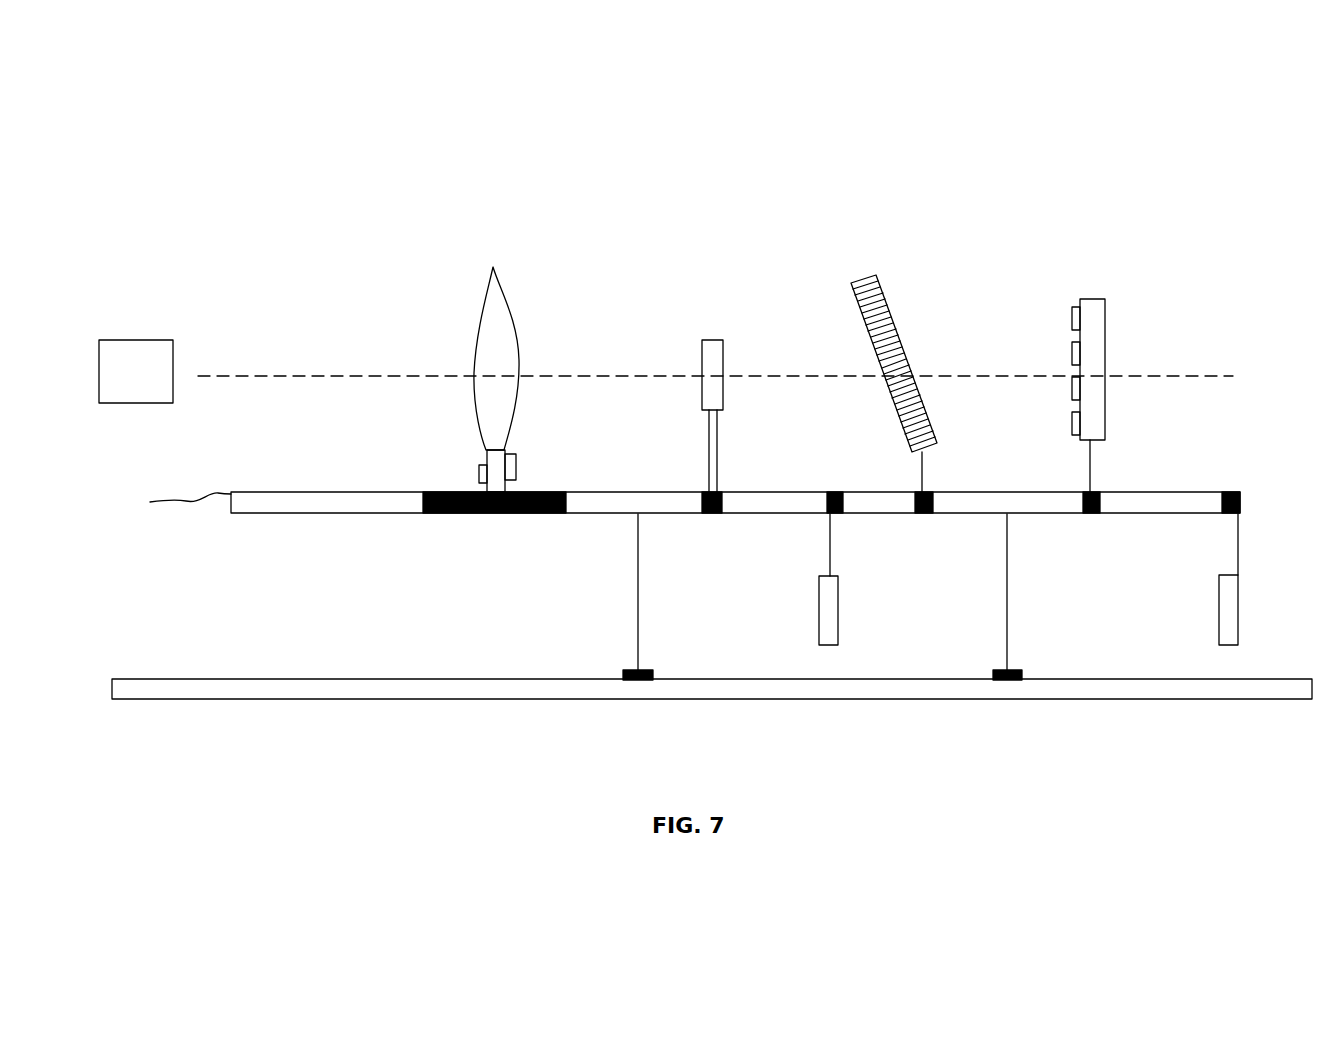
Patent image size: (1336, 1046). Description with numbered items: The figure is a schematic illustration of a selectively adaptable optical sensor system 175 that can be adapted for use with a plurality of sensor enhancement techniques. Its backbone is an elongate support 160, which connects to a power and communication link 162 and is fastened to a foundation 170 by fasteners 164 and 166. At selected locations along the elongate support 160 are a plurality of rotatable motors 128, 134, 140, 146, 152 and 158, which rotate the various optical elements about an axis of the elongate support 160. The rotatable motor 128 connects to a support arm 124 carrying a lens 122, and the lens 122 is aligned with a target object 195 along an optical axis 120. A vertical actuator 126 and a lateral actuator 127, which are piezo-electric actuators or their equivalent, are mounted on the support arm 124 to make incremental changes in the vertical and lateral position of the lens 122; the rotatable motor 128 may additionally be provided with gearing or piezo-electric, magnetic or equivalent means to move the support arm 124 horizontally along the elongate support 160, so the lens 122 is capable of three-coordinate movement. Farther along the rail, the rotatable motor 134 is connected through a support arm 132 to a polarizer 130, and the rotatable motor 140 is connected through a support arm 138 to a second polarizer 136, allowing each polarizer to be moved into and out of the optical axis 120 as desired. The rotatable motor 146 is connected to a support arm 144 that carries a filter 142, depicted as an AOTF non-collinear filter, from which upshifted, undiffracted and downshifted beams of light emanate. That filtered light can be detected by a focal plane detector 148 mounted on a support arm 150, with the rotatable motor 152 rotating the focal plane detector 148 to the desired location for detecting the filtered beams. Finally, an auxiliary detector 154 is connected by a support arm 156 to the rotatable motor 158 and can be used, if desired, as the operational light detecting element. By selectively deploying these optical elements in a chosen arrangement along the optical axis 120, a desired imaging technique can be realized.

The selectively adaptable optical sensor system 175 is at (1020, 232).
The target object 195 is at (122, 340).
The optical axis 120 is at (355, 378).
The lens 122 is at (476, 316).
The support arm 124 is at (486, 455).
The vertical actuator 126 is at (479, 474).
The lateral actuator 127 is at (516, 462).
The rotatable motor 128 is at (502, 514).
The polarizer 130 is at (712, 340).
The support arm 132 is at (718, 440).
The rotatable motor 134 is at (712, 514).
The second polarizer 136 is at (819, 618).
The support arm 138 is at (831, 545).
The rotatable motor 140 is at (835, 492).
The filter 142 is at (836, 313).
The support arm 144 is at (923, 470).
The rotatable motor 146 is at (925, 514).
The focal plane detector 148 is at (1105, 303).
The support arm 150 is at (1091, 470).
The rotatable motor 152 is at (1092, 514).
The auxiliary detector 154 is at (1239, 612).
The support arm 156 is at (1239, 552).
The rotatable motor 158 is at (1241, 497).
The elongate support 160 is at (322, 514).
The power and communication link 162 is at (175, 503).
The fastener 164 is at (637, 620).
The fastener 166 is at (1008, 636).
The foundation 170 is at (256, 679).